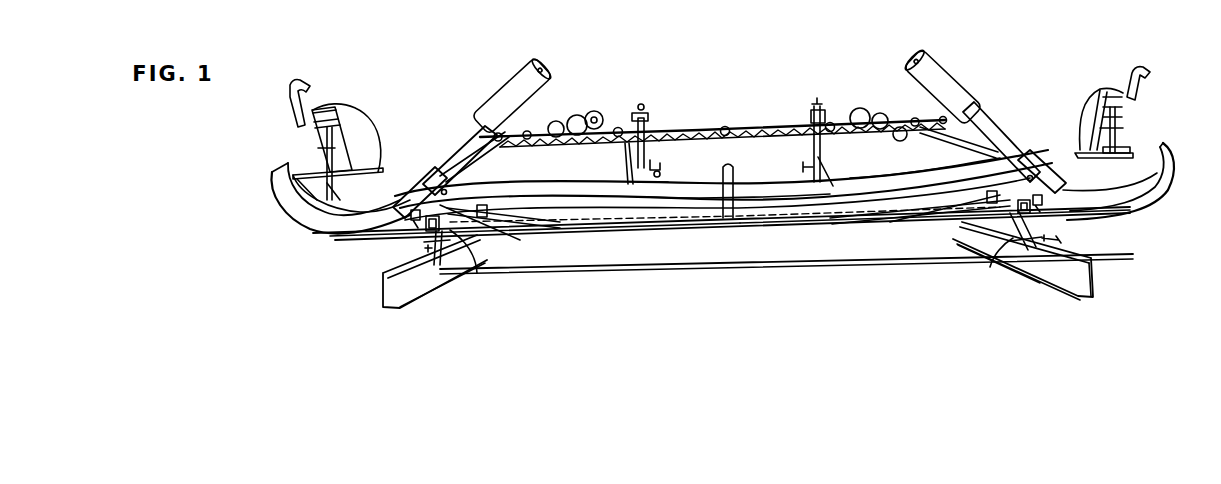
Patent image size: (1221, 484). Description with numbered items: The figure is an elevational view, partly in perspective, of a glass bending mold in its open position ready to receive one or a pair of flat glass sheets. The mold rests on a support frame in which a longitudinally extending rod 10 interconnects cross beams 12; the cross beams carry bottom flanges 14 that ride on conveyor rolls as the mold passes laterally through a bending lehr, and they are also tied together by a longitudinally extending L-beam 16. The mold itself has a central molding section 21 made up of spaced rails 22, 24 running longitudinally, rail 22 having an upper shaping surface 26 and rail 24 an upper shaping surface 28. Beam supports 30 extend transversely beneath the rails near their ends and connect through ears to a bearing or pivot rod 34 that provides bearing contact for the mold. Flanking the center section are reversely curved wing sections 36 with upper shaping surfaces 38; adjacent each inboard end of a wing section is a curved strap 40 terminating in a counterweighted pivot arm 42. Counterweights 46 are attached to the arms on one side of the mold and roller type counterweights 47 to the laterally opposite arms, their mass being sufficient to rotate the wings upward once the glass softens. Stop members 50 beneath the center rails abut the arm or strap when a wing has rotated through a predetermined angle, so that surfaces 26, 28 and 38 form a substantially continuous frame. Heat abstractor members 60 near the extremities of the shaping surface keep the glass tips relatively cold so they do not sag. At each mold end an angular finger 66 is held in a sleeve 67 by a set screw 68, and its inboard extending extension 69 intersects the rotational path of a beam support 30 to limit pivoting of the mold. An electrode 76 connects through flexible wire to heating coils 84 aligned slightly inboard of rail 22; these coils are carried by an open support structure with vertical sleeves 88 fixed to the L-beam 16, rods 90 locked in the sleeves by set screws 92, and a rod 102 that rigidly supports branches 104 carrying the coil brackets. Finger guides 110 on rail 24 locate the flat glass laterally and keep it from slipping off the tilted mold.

The longitudinally extending rod 10 is at (705, 272).
The cross beams 12 is at (381, 298).
The bottom flanges 14 is at (443, 285).
The longitudinally extending L-beam 16 is at (556, 224).
The central molding section 21 is at (728, 231).
The rail 22 is at (843, 187).
The rail 24 is at (868, 200).
The upper shaping surface 26 is at (703, 186).
The upper shaping surface 28 is at (778, 196).
The beam supports 30 is at (425, 239).
The bearing or pivot rod 34 is at (895, 216).
The wing sections 36 is at (370, 233).
The upper shaping surfaces 38 is at (287, 160).
The curved strap 40 is at (407, 203).
The counterweighted pivot arms 42 is at (497, 134).
The counterweights 46 is at (512, 92).
The roller type counterweights 47 is at (590, 112).
The stop members 50 is at (487, 212).
The heat abstractor members 60 is at (317, 170).
The angular finger 66 is at (426, 259).
The sleeve 67 is at (1093, 273).
The set screw 68 is at (1062, 239).
The inboard extending extension 69 is at (474, 268).
The electrode 76 is at (288, 92).
The heating coils 84 is at (688, 136).
The vertical sleeves 88 is at (656, 179).
The rod 90 is at (640, 160).
The set screws 92 is at (660, 170).
The rod 102 is at (774, 128).
The branches 104 is at (619, 128).
The finger guides 110 is at (734, 176).